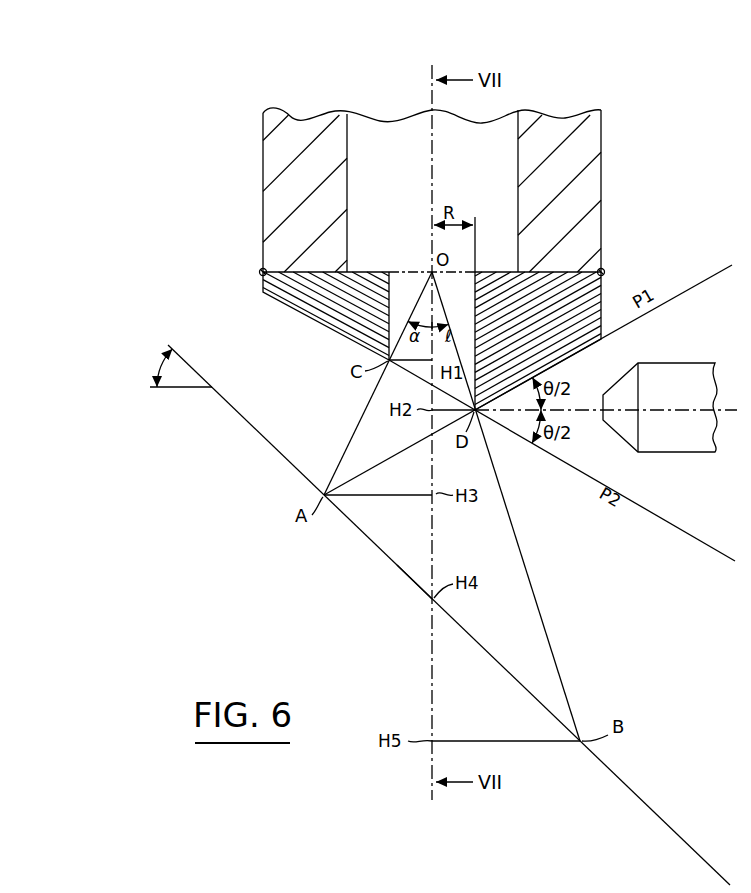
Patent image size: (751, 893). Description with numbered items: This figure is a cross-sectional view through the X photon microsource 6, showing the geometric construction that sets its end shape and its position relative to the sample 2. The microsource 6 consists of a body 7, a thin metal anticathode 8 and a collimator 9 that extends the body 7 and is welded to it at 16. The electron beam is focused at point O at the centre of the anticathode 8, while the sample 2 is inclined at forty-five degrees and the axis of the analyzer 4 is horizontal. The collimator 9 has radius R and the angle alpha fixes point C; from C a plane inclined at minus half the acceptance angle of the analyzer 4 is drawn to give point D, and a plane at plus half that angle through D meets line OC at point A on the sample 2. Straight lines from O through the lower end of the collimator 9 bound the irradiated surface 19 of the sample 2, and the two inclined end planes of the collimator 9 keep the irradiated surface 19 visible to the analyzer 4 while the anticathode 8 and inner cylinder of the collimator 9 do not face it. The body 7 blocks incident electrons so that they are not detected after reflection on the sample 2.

The sample 2 is at (268, 440).
The analyzer 4 is at (672, 380).
The X photon microsource 6 is at (260, 184).
The body 7 is at (573, 157).
The anticathode 8 is at (405, 270).
The collimator 9 is at (308, 300).
The weld 16 is at (260, 270).
The irradiated surface 19 is at (397, 566).